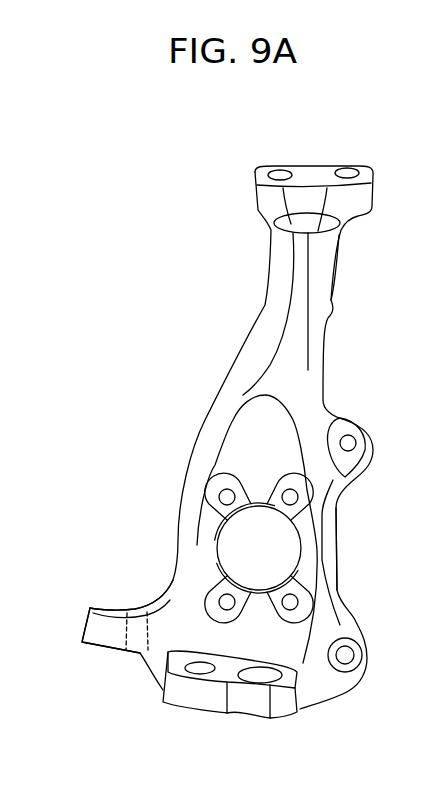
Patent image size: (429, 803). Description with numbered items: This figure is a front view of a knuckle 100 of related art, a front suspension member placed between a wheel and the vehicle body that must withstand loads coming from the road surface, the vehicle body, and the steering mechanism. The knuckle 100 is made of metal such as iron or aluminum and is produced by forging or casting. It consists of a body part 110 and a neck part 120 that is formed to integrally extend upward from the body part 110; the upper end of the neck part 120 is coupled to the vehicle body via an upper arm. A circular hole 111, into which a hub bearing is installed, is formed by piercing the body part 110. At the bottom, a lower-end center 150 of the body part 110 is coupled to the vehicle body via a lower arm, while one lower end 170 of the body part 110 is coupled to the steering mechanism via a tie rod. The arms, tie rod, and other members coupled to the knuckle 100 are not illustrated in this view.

The knuckle 100 is at (204, 244).
The body part 110 is at (337, 527).
The circular hole 111 is at (218, 549).
The neck part 120 is at (333, 279).
The lower-end center 150 is at (164, 706).
The lower end 170 is at (84, 628).